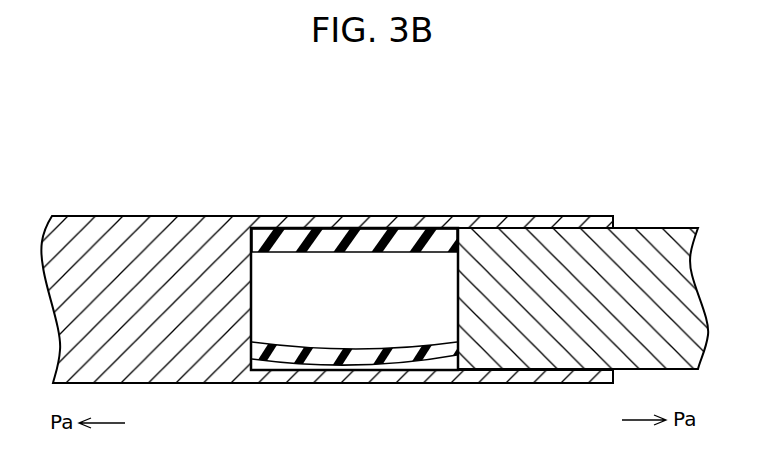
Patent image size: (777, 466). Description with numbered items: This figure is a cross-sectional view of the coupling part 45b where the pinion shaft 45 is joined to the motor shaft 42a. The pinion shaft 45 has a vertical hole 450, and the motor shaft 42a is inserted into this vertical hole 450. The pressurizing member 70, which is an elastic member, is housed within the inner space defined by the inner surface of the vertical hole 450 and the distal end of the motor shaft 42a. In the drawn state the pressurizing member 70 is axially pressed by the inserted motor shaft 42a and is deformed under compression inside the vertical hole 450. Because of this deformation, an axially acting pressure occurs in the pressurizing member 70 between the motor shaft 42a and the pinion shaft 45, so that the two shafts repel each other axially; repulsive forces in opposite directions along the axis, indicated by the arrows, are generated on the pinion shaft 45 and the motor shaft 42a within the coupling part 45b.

The pinion shaft 45 is at (165, 222).
The coupling part 45b is at (461, 147).
The vertical hole 450 is at (398, 234).
The motor shaft 42a is at (652, 232).
The pressurizing member 70 is at (388, 357).